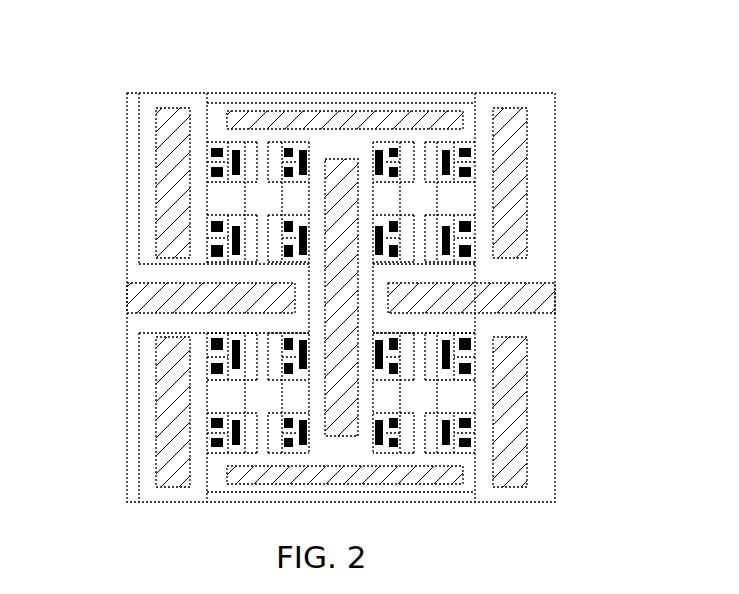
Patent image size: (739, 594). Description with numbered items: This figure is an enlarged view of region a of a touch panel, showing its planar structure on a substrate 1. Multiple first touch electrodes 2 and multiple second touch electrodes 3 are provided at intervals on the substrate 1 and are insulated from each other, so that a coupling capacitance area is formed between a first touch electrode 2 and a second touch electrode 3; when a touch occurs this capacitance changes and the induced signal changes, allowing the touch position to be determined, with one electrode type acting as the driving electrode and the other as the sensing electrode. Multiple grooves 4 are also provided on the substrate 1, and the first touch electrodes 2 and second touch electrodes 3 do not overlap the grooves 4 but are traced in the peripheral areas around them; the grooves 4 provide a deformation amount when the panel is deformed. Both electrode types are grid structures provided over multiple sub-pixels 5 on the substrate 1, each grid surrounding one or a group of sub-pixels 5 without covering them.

The substrate 1 is at (359, 93).
The enlarged region a is at (537, 93).
The first touch electrode 2 is at (266, 239).
The second touch electrode 3 is at (231, 142).
The groove 4 is at (155, 158).
The sub-pixel 5 is at (212, 251).